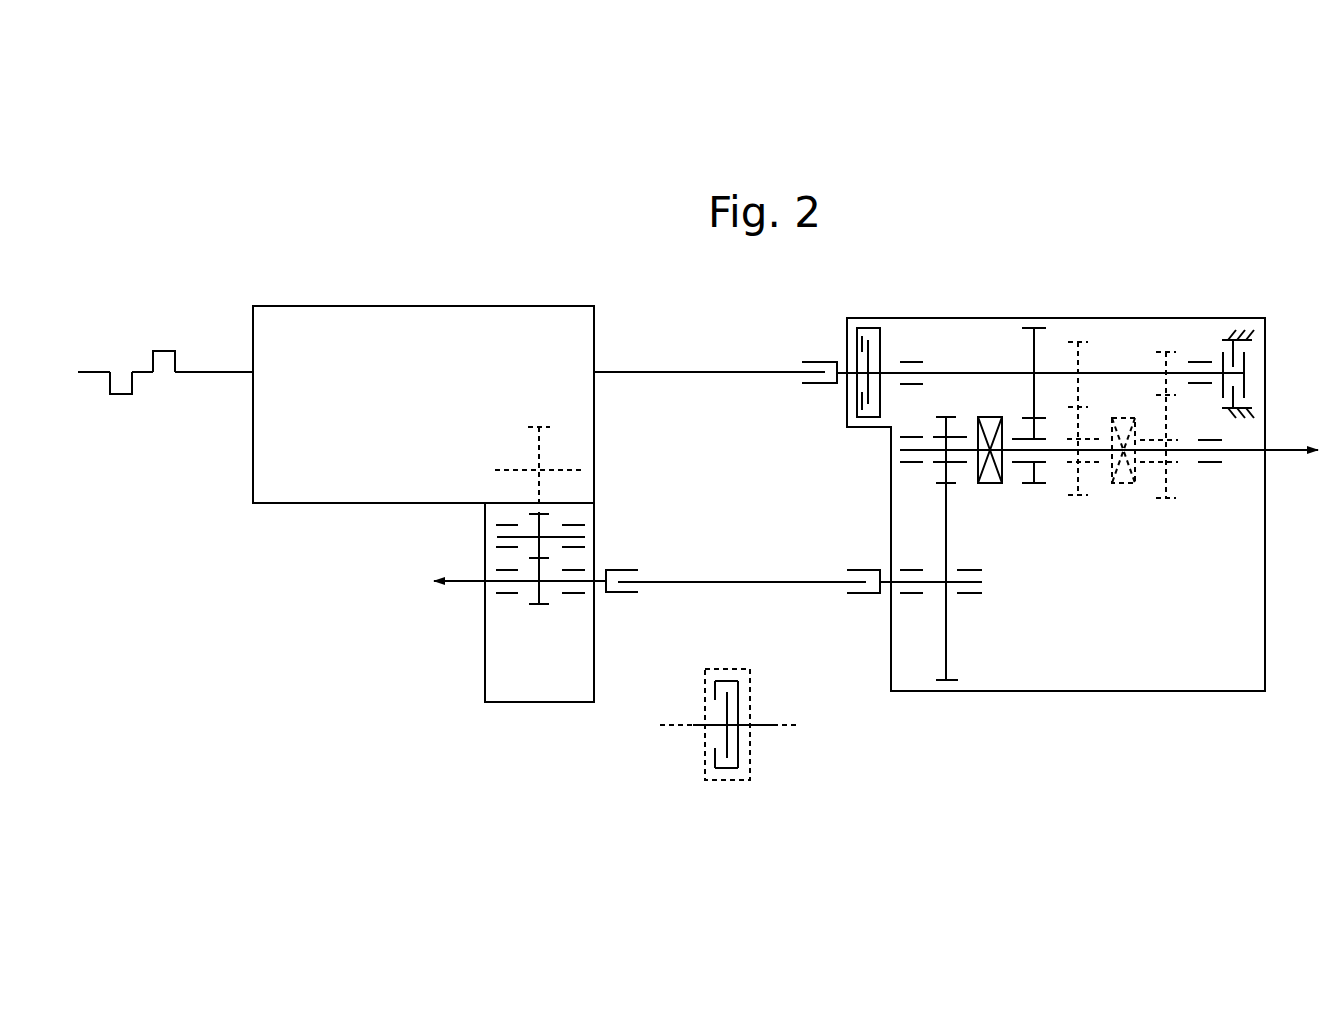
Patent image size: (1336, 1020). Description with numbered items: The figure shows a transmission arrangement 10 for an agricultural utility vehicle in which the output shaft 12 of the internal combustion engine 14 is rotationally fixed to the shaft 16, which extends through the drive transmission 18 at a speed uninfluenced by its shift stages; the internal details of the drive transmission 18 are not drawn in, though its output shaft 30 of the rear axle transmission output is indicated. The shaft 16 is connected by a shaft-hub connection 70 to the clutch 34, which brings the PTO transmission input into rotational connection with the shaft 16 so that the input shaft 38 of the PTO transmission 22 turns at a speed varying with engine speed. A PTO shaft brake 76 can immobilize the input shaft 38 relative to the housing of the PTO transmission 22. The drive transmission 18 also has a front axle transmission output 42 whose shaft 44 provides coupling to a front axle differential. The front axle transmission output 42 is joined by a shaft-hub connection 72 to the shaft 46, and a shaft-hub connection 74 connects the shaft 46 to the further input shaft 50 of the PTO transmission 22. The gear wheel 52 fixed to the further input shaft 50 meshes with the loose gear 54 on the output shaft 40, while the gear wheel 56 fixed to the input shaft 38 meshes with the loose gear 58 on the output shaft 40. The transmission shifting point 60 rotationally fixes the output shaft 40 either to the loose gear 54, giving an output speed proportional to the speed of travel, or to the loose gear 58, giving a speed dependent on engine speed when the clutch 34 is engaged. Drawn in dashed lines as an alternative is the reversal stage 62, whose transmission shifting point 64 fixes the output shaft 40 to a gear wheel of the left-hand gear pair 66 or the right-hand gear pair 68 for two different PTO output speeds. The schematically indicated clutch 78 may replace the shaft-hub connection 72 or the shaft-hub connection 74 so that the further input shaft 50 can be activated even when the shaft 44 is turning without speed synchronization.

The transmission arrangement 10 is at (620, 272).
The output shaft 12 is at (215, 372).
The internal combustion engine 14 is at (122, 355).
The shaft 16 is at (655, 370).
The drive transmission 18 is at (307, 305).
The PTO transmission 22 is at (1047, 297).
The output shaft 30 is at (558, 472).
The clutch 34 is at (867, 328).
The input shaft 38 is at (975, 372).
The output shaft 40 is at (1290, 448).
The front axle transmission output 42 is at (485, 682).
The shaft 44 is at (452, 583).
The shaft 46 is at (735, 580).
The further input shaft 50 is at (937, 585).
The gear wheel 52 is at (948, 657).
The loose gear 54 is at (946, 427).
The gear wheel 56 is at (1037, 343).
The loose gear 58 is at (1020, 485).
The transmission shifting point 60 is at (990, 487).
The reversal stage 62 is at (1128, 414).
The transmission shifting point 64 is at (1122, 492).
The left-hand gear pair 66 is at (1078, 503).
The right-hand gear pair 68 is at (1169, 512).
The shaft-hub connection 70 is at (820, 360).
The shaft-hub connection 72 is at (627, 570).
The shaft-hub connection 74 is at (865, 595).
The PTO shaft brake 76 is at (1222, 355).
The clutch 78 is at (757, 762).